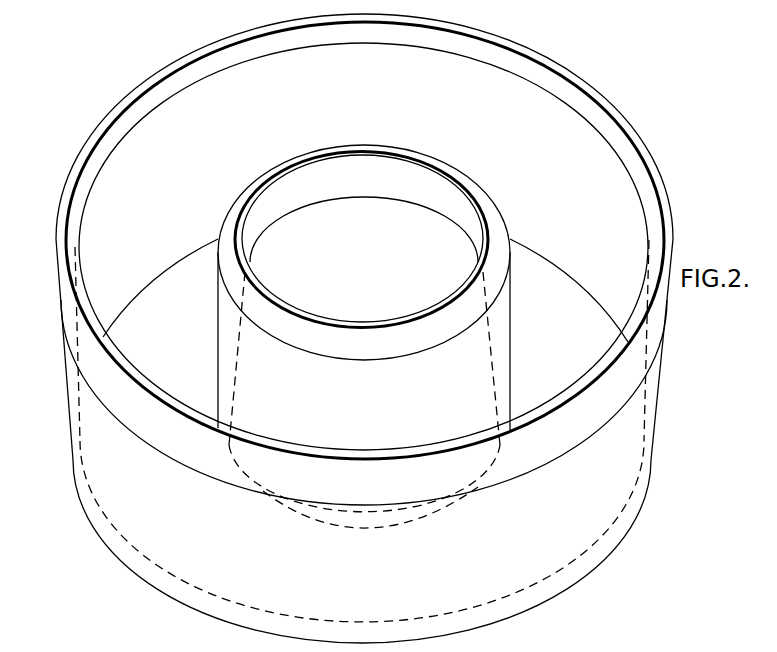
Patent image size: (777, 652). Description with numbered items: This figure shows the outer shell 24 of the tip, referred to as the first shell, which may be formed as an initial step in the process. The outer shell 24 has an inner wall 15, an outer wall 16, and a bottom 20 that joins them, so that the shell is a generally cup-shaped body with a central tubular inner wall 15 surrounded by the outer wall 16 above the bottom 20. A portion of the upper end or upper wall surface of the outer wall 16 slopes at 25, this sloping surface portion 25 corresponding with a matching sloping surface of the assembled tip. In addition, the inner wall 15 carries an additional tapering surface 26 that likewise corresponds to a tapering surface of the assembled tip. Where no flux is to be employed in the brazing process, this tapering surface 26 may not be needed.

The inner wall 15 is at (217, 330).
The outer wall 16 is at (63, 349).
The bottom 20 is at (577, 298).
The outer shell 24 is at (708, 370).
The sloping surface portion 25 is at (78, 196).
The tapering surface 26 is at (502, 237).